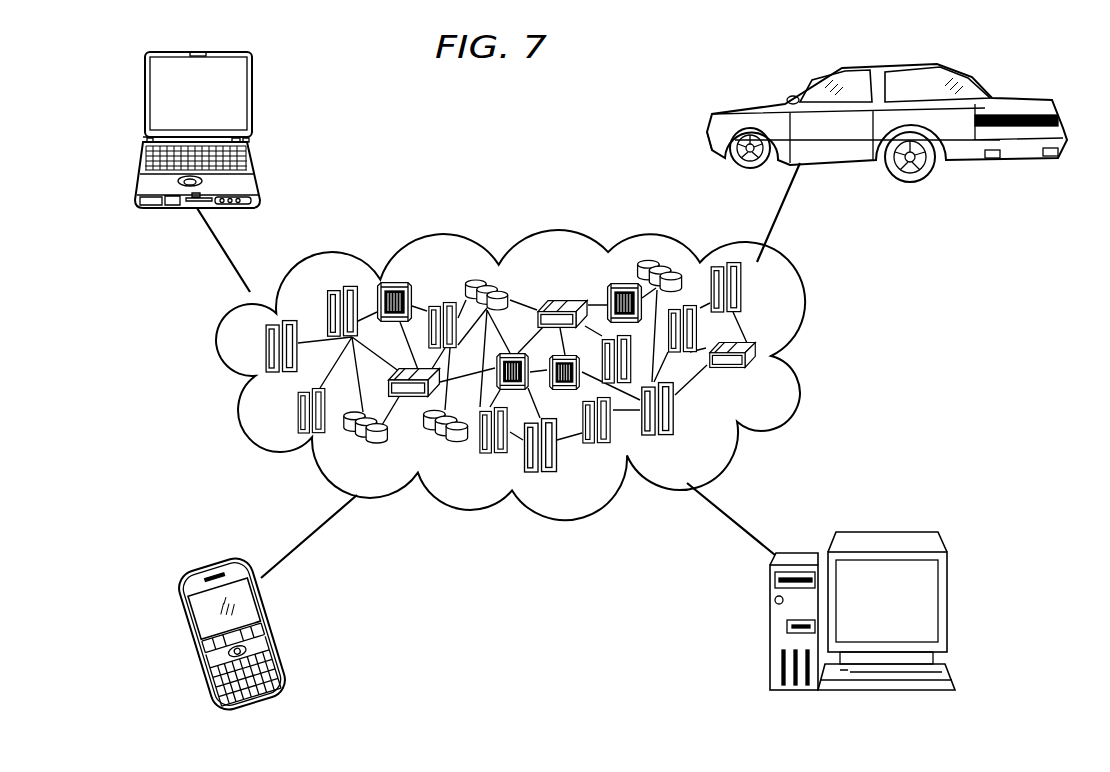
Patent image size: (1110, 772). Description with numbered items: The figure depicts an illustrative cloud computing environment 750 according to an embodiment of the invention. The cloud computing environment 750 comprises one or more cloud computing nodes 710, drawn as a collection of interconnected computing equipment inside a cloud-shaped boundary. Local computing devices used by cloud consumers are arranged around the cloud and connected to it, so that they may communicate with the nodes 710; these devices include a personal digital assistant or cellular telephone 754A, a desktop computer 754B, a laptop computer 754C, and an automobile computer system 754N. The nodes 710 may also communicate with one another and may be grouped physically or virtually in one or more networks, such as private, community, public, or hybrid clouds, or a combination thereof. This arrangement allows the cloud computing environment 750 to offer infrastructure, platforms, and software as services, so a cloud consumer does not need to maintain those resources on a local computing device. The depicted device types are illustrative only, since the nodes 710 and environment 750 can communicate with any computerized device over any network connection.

The cloud computing nodes 710 is at (764, 374).
The cloud computing environment 750 is at (805, 306).
The personal digital assistant (PDA) or cellular telephone 754A is at (181, 620).
The desktop computer 754B is at (885, 532).
The laptop computer 754C is at (143, 90).
The automobile computer system 754N is at (1038, 104).